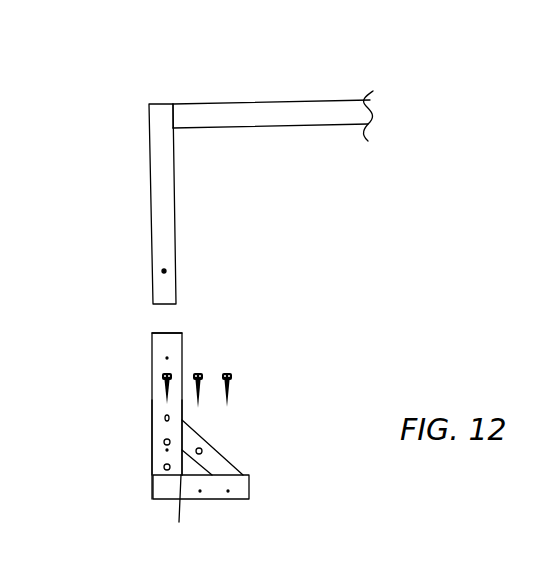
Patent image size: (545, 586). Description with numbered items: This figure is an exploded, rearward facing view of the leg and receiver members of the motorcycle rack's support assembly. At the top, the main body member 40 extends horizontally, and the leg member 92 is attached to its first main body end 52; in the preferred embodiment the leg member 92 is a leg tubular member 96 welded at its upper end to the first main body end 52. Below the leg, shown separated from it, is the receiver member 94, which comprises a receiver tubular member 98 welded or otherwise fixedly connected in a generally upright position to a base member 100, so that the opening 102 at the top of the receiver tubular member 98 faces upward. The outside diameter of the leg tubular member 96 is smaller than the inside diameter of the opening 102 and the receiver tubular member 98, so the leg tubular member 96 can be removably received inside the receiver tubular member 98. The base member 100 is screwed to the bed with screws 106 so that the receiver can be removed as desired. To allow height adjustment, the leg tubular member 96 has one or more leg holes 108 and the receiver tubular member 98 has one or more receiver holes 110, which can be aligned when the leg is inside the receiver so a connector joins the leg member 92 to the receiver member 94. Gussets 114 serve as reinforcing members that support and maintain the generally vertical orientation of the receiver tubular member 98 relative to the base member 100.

The main body member 40 is at (278, 107).
The first main body end 52 is at (183, 102).
The leg member 92 is at (150, 228).
The leg tubular member 96 is at (162, 192).
The leg holes 108 is at (157, 275).
The opening 102 is at (165, 333).
The receiver tubular member 98 is at (155, 362).
The receiver member 94 is at (150, 412).
The screws 106 is at (233, 375).
The receiver holes 110 is at (167, 442).
The gussets 114 is at (210, 458).
The base member 100 is at (250, 478).